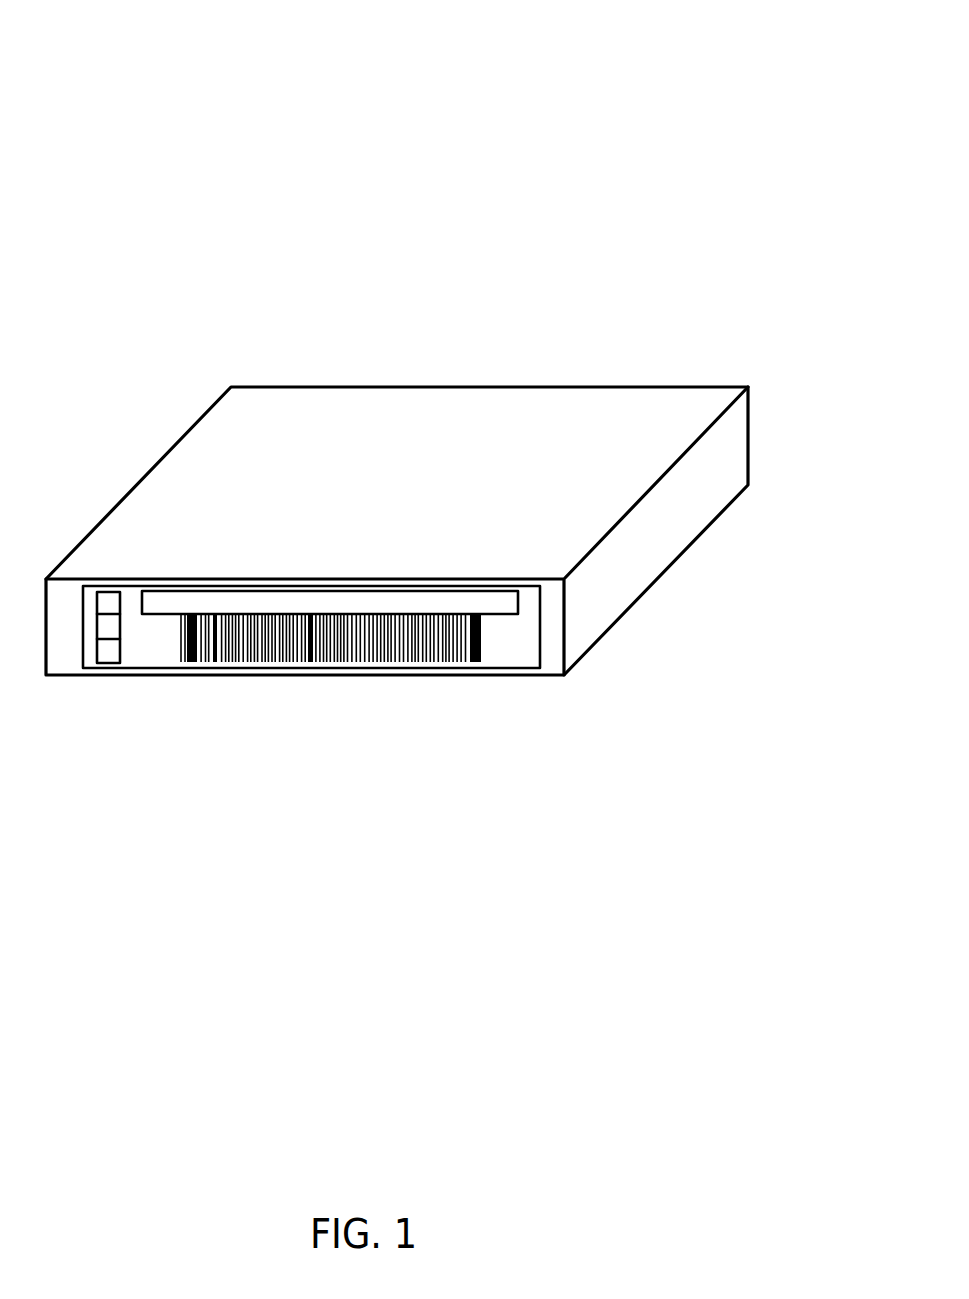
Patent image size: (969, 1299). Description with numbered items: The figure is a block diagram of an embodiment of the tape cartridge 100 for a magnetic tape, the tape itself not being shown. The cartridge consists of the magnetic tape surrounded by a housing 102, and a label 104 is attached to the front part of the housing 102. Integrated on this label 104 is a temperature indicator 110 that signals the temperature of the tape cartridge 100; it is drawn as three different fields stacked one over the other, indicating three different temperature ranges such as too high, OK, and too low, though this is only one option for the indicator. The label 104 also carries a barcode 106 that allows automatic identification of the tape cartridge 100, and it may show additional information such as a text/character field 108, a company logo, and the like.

The tape cartridge 100 is at (409, 426).
The housing 102 is at (538, 472).
The label 104 is at (505, 655).
The barcode 106 is at (393, 657).
The text/character field 108 is at (495, 602).
The temperature indicator 110 is at (112, 644).